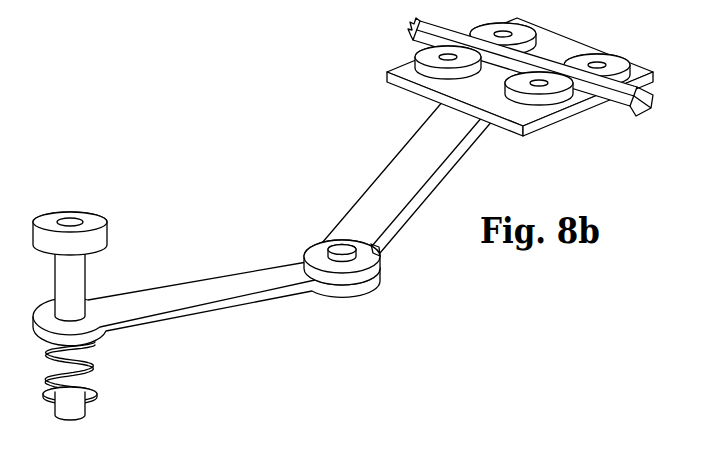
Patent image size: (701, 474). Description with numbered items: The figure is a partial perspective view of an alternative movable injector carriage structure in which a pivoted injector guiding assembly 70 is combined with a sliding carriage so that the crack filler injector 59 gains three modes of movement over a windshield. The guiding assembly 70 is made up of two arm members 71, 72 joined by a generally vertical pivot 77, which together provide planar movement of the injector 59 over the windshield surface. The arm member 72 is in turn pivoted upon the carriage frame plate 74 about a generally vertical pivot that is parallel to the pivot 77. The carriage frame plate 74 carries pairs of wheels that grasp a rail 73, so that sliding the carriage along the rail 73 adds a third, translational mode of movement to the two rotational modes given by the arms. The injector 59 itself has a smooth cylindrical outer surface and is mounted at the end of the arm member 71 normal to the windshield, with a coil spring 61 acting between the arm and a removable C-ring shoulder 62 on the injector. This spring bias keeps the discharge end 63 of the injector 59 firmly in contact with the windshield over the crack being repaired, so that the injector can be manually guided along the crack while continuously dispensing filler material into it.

The crack filler injector 59 is at (68, 285).
The coil spring 61 is at (90, 368).
The removable C-ring shoulder 62 is at (92, 395).
The discharge end 63 is at (72, 418).
The pivoted injector guiding assembly 70 is at (387, 207).
The arm member 71 is at (200, 296).
The arm member 72 is at (368, 229).
The rail 73 is at (603, 102).
The carriage frame plate 74 is at (413, 85).
The pivot 77 is at (350, 257).